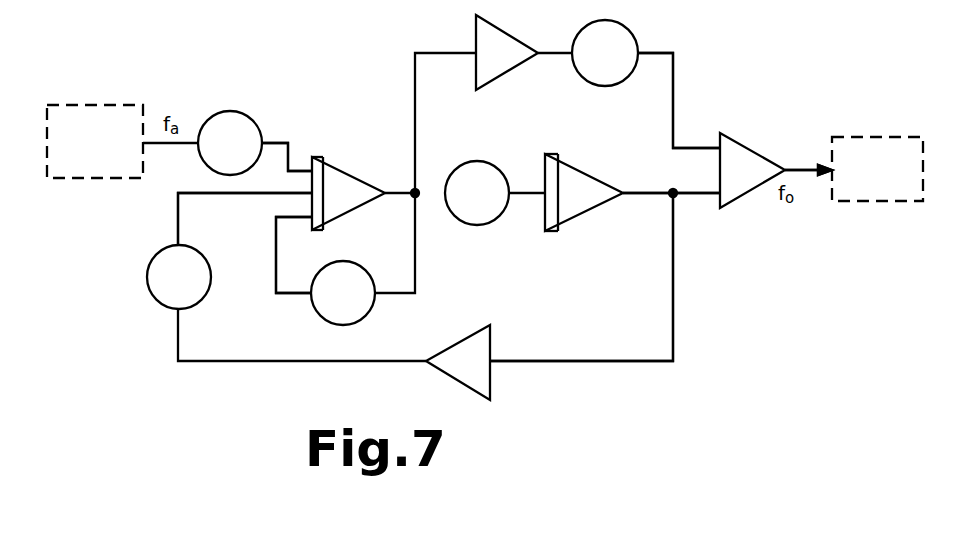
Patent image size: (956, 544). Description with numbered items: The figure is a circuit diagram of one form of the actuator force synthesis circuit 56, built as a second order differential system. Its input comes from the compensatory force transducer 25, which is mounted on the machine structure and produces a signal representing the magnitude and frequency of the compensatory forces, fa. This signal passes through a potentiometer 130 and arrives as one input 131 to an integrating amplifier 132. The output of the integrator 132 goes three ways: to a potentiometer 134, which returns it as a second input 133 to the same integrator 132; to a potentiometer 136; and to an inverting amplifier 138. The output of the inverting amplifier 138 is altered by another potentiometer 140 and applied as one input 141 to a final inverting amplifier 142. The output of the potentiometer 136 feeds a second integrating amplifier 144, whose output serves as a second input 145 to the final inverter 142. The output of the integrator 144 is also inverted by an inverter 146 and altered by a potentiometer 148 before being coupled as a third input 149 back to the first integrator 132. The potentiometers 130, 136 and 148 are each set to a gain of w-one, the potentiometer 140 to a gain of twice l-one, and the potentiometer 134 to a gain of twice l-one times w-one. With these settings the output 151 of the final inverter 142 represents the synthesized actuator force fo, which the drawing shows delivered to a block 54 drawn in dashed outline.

The second force transducer 25 is at (112, 103).
The potentiometer 130 is at (245, 127).
The first input 131 is at (289, 142).
The integrating amplifier 132 is at (352, 165).
The second input 133 is at (291, 218).
The potentiometer 134 is at (368, 270).
The potentiometer 136 is at (490, 225).
The inverting amplifier 138 is at (518, 38).
The potentiometer 140 is at (636, 40).
The first input 141 is at (695, 147).
The final inverting amplifier 142 is at (760, 150).
The second integrating amplifier 144 is at (588, 214).
The second input 145 is at (692, 196).
The inverter 146 is at (468, 388).
The potentiometer 148 is at (148, 272).
The third input 149 is at (240, 195).
The output 151 is at (800, 169).
The output device 54 is at (890, 203).
The actuator force synthesis circuit 56 is at (700, 364).